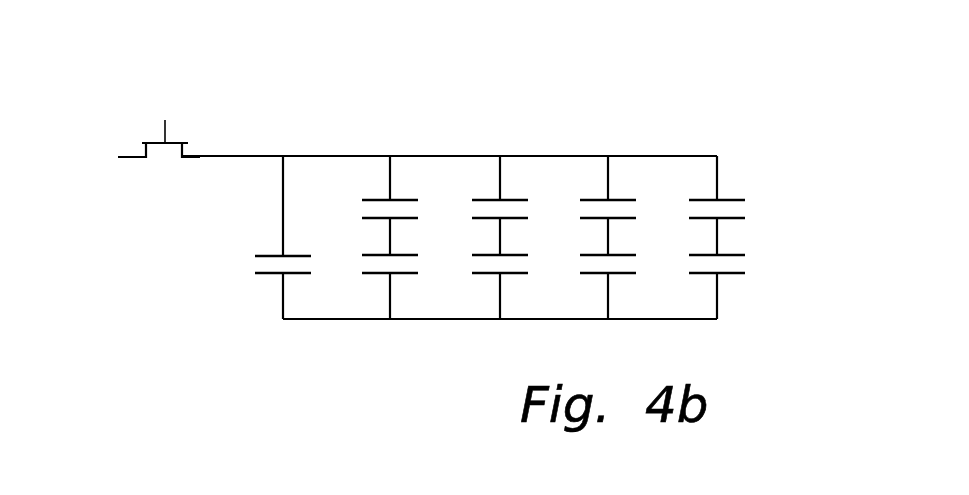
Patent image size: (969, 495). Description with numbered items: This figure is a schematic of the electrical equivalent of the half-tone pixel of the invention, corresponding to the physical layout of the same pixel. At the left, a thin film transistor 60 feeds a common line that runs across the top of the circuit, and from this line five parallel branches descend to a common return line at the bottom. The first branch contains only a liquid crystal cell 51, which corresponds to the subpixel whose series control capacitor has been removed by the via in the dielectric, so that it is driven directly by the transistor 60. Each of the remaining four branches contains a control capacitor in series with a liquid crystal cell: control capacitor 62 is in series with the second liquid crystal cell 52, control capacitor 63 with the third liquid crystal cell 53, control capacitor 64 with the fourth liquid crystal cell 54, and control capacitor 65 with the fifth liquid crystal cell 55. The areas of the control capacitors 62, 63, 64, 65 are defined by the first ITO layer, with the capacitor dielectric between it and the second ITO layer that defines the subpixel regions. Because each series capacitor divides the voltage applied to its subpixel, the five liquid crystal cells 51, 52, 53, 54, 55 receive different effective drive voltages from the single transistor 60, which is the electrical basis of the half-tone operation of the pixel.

The thin film transistor (TFT) 60 is at (151, 142).
The liquid crystal cell LC1 51 is at (263, 255).
The liquid crystal cell LC2 52 is at (366, 279).
The liquid crystal cell LC3 53 is at (476, 279).
The liquid crystal cell LC4 54 is at (584, 279).
The liquid crystal cell LC5 55 is at (693, 279).
The control capacitor 62 is at (371, 199).
The control capacitor 63 is at (480, 199).
The control capacitor 64 is at (590, 199).
The control capacitor 65 is at (699, 199).